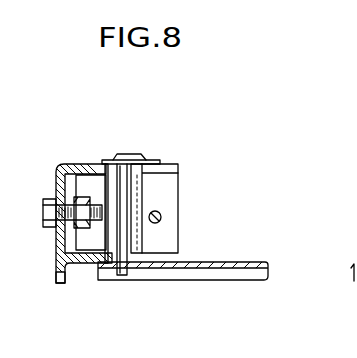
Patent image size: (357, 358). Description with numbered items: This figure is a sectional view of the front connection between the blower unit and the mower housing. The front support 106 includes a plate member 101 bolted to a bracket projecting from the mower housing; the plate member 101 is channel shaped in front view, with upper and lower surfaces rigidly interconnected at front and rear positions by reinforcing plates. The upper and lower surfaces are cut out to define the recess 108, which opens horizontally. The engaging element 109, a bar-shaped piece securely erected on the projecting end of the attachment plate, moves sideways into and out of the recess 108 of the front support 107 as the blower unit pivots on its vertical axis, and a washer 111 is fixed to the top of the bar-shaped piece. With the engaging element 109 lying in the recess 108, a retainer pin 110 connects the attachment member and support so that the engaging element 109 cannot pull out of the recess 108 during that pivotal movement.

The front attachment member 101 is at (226, 261).
The front support 106 is at (78, 148).
The front support 107 is at (90, 266).
The recess 108 is at (170, 152).
The engaging element 109 is at (130, 272).
The retainer pin 110 is at (161, 213).
The washer 111 is at (108, 160).